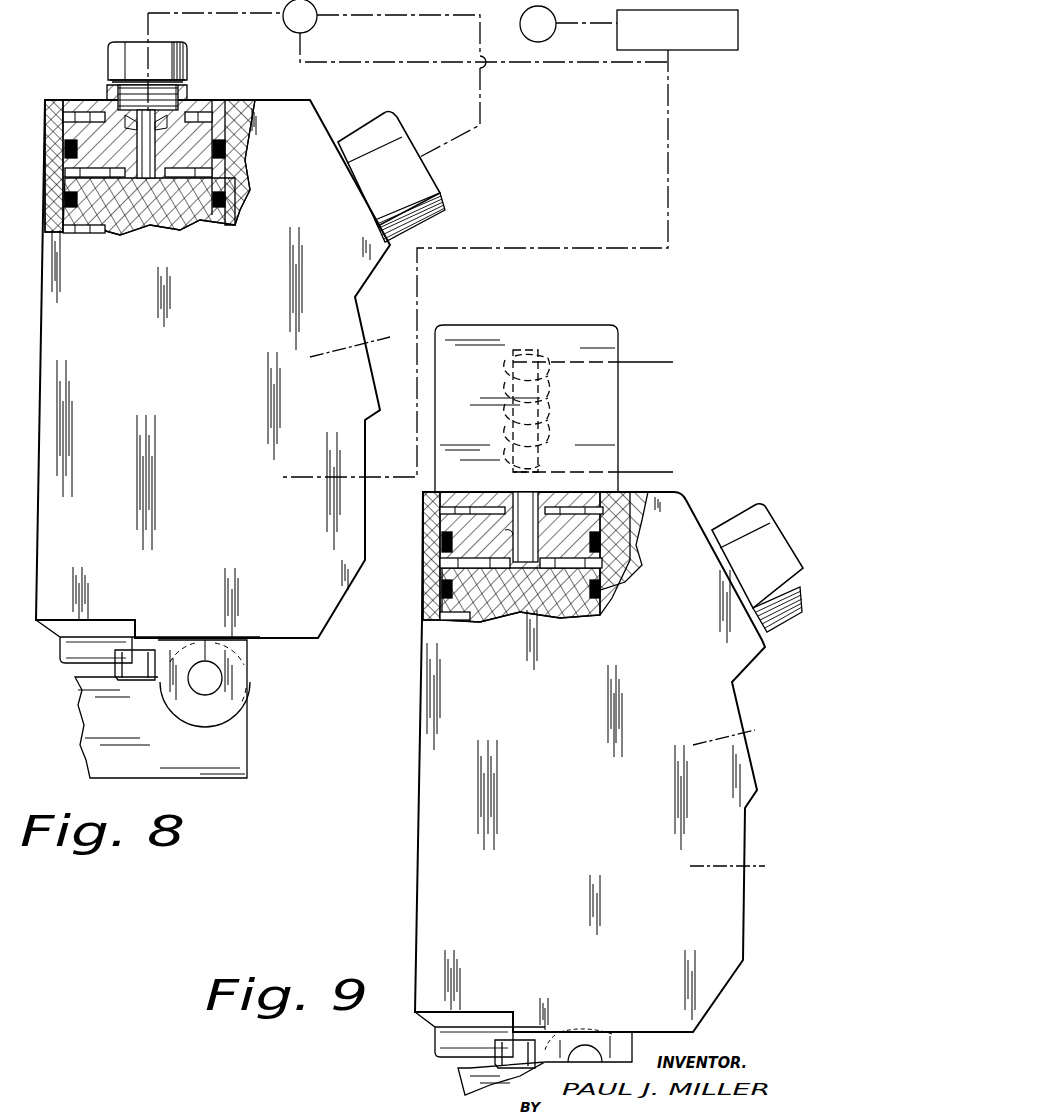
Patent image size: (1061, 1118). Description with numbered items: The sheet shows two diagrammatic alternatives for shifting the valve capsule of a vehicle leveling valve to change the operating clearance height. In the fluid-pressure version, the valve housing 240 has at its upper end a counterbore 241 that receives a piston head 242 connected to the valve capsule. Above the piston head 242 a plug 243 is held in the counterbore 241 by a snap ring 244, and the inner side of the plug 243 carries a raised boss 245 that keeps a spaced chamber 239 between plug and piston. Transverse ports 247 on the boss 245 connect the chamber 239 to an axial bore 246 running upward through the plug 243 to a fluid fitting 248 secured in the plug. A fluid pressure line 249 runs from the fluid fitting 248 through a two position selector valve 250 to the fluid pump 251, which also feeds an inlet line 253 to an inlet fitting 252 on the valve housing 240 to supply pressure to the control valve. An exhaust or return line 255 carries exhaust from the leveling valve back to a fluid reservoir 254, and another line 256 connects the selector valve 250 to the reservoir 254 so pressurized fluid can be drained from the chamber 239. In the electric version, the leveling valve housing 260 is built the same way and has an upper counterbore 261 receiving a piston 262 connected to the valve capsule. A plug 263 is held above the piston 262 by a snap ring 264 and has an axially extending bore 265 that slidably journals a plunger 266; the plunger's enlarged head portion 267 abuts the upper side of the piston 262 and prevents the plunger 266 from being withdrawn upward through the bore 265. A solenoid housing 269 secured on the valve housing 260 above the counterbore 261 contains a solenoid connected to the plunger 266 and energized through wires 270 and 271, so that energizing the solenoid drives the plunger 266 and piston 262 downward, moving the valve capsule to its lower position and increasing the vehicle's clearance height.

In FIG. 8, the chamber 239 is at (222, 176).
In FIG. 8, the valve housing 240 is at (226, 349).
In FIG. 8, the counterbore 241 is at (70, 100).
In FIG. 8, the piston head 242 is at (162, 217).
In FIG. 8, the plug 243 is at (240, 137).
In FIG. 8, the snap ring 244 is at (213, 112).
In FIG. 8, the raised boss 245 is at (158, 178).
In FIG. 8, the axial bore 246 is at (143, 150).
In FIG. 8, the transverse ports 247 is at (149, 206).
In FIG. 8, the fluid fitting 248 is at (112, 45).
In FIG. 8, the fluid pressure line 249 is at (227, 15).
In FIG. 8, the two position selector valve 250 is at (312, 26).
In FIG. 8, the fluid pump 251 is at (547, 33).
In FIG. 8, the inlet fitting 252 is at (416, 181).
In FIG. 8, the inlet line 253 is at (480, 103).
In FIG. 8, the fluid reservoir 254 is at (695, 48).
In FIG. 8, the exhaust or return line 255 is at (587, 250).
In FIG. 8, the line 256 is at (437, 65).
In FIG. 9, the leveling valve housing 260 is at (445, 778).
In FIG. 9, the counterbore 261 is at (440, 578).
In FIG. 9, the piston 262 is at (560, 596).
In FIG. 9, the plug 263 is at (552, 514).
In FIG. 9, the snap ring 264 is at (628, 508).
In FIG. 9, the axially extending bore 265 is at (521, 561).
In FIG. 9, the plunger 266 is at (520, 492).
In FIG. 9, the enlarged head portion 267 is at (526, 565).
In FIG. 9, the solenoid housing 269 is at (620, 418).
In FIG. 9, the wire 270 is at (665, 362).
In FIG. 9, the wire 271 is at (663, 472).